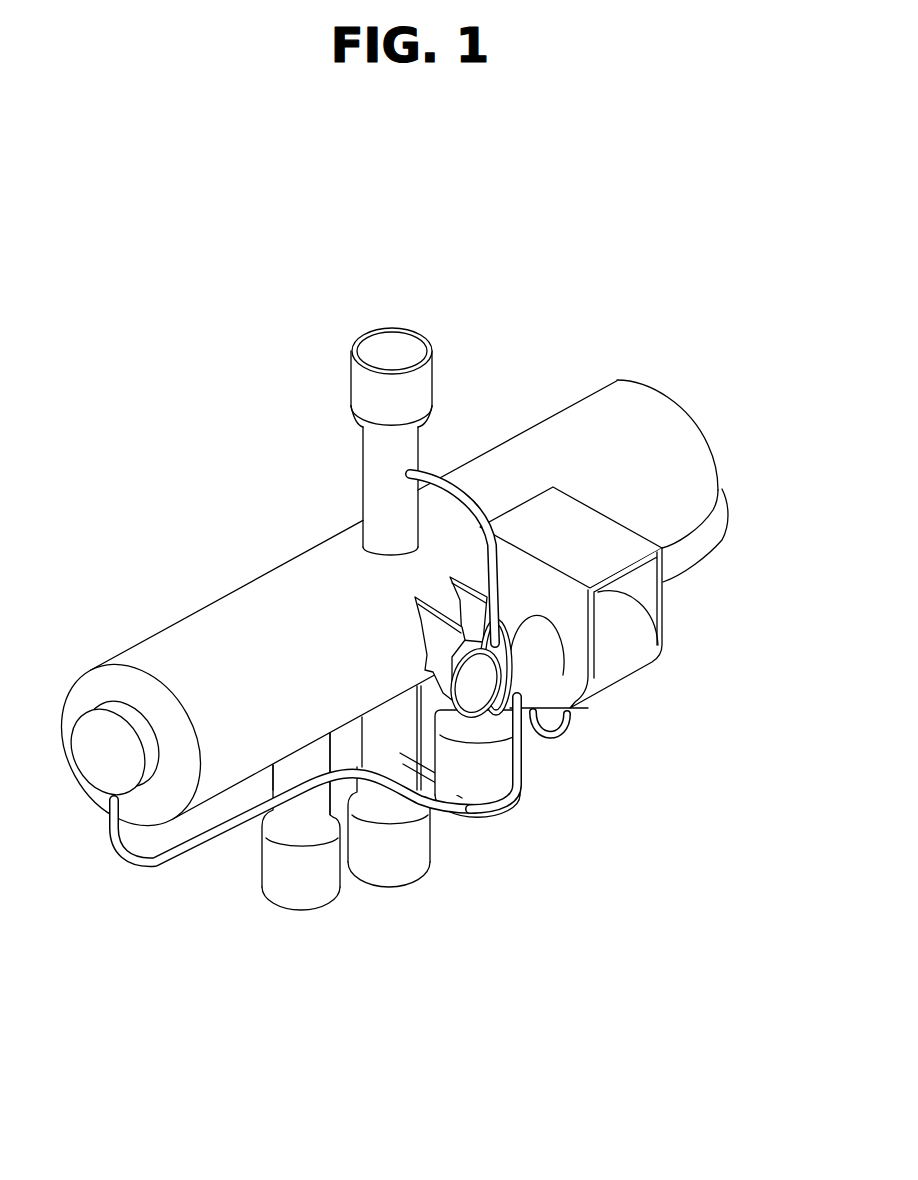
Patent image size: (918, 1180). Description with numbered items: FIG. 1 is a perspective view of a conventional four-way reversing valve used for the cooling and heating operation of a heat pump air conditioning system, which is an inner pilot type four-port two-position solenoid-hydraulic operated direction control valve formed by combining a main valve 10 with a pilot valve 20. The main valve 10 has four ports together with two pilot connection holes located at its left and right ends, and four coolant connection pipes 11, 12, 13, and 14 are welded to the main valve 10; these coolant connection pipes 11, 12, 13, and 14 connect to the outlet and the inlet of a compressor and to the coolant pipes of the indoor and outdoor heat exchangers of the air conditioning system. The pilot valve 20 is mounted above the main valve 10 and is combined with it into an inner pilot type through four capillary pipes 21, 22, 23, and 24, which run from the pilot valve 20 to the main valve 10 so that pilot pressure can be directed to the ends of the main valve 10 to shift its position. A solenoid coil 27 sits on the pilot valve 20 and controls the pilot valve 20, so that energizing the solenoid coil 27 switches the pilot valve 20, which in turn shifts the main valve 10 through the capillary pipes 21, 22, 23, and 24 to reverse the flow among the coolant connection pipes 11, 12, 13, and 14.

The main valve 10 is at (214, 592).
The coolant connection pipe 11 is at (362, 387).
The coolant connection pipe 12 is at (490, 783).
The coolant connection pipe 13 is at (297, 890).
The coolant connection pipe 14 is at (407, 857).
The pilot valve 20 is at (606, 743).
The capillary pipe 21 is at (455, 493).
The capillary pipe 22 is at (710, 553).
The capillary pipe 23 is at (155, 866).
The capillary pipe 24 is at (518, 767).
The solenoid coil 27 is at (633, 647).